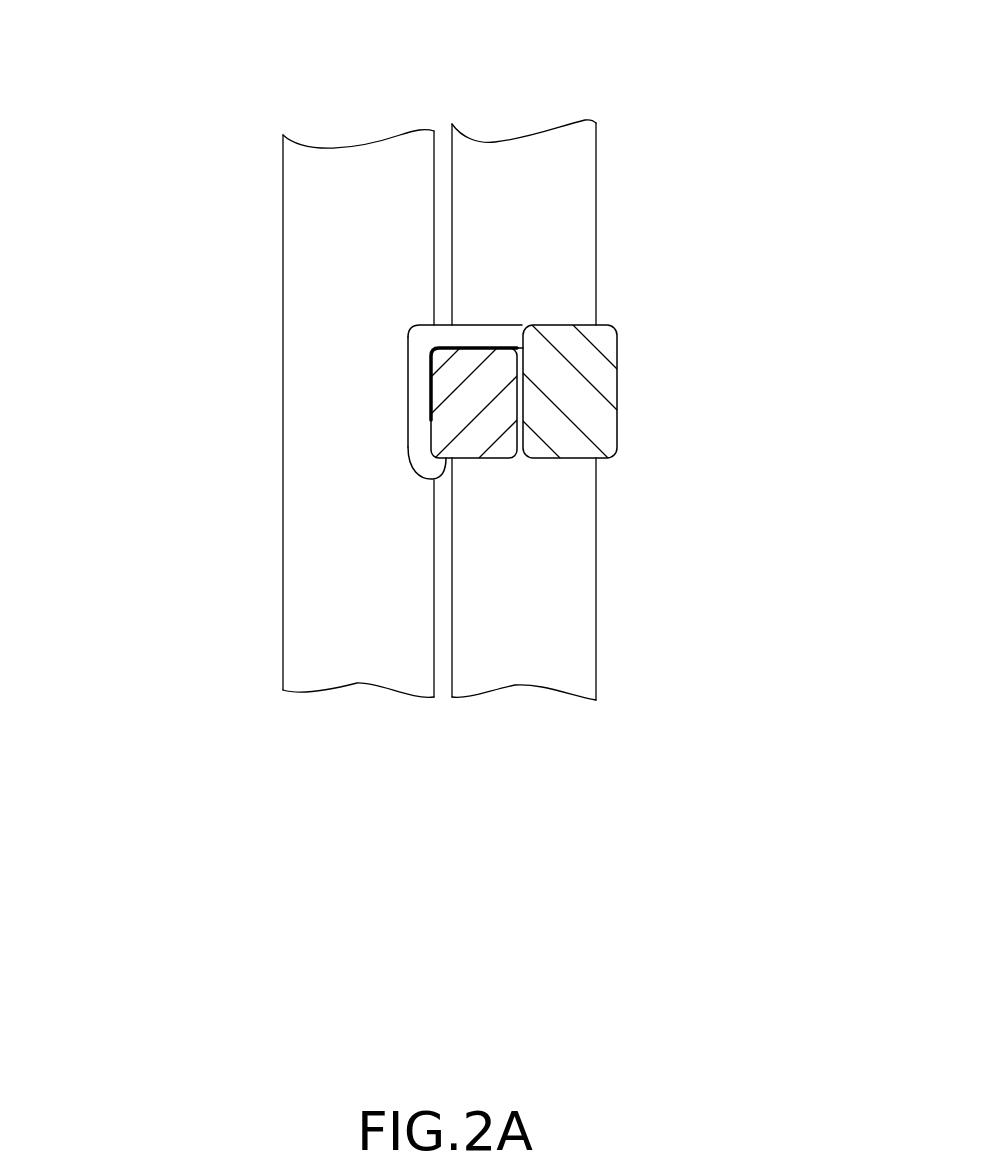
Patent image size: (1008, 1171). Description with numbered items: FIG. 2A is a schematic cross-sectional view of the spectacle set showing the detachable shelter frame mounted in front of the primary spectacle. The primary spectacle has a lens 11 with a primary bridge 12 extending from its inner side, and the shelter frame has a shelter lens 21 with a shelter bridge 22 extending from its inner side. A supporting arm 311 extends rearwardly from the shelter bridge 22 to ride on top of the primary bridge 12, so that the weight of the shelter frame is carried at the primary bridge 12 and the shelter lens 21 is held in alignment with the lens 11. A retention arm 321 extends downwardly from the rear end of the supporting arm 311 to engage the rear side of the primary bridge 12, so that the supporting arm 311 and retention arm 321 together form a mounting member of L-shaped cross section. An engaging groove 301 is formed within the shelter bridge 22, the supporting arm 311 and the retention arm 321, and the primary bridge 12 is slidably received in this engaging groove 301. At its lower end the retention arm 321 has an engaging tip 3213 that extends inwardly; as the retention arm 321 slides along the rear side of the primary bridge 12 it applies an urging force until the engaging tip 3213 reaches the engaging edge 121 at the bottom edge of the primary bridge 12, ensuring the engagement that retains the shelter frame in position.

The lens 11 is at (297, 190).
The shelter lens 21 is at (570, 168).
The primary bridge 12 is at (473, 443).
The engaging edge 121 is at (439, 444).
The shelter bridge 22 is at (593, 424).
The engaging groove 301 is at (462, 465).
The supporting arm 311 is at (478, 337).
The retention arm 321 is at (415, 380).
The engaging tip 3213 is at (427, 463).